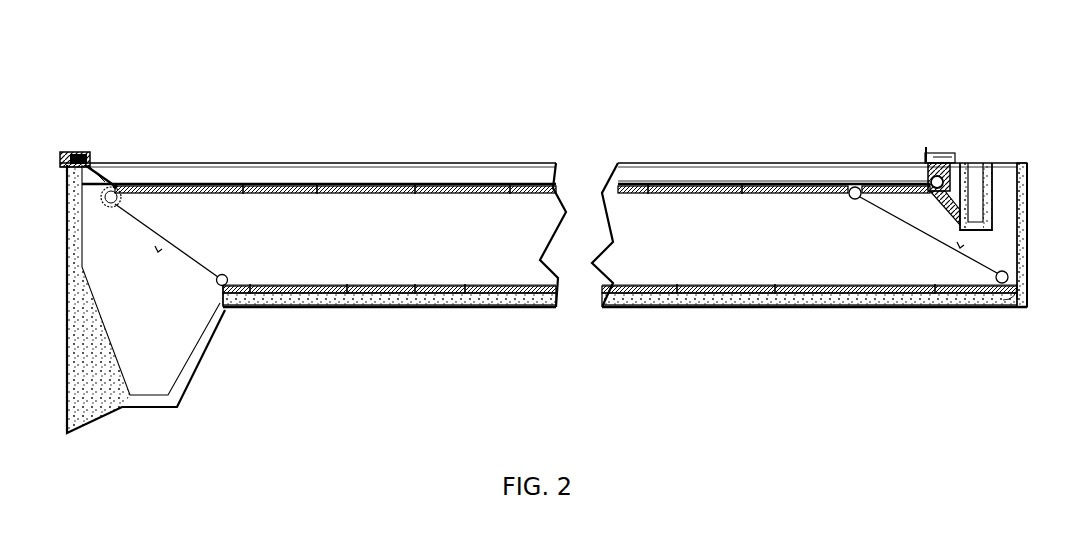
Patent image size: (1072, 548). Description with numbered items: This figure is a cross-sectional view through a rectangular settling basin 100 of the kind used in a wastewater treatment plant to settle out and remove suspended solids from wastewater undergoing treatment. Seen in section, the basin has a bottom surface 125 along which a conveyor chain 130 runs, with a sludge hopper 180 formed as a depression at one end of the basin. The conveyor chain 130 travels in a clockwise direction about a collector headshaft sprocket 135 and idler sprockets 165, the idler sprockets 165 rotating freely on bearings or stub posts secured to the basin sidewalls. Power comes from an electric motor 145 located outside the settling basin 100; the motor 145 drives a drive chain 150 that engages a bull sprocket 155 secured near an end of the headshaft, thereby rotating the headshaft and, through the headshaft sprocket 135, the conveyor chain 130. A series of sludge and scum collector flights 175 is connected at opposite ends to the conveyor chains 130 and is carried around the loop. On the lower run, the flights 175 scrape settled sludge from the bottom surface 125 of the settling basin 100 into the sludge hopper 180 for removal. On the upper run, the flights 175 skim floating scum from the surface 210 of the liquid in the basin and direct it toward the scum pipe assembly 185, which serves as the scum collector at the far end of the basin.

The settling basin 100 is at (457, 111).
The bottom surface 125 is at (415, 295).
The conveyor chain 130 is at (489, 193).
The collector headshaft sprocket 135 is at (109, 207).
The electric motor 145 is at (69, 152).
The drive chain 150 is at (105, 172).
The bull sprocket 155 is at (123, 200).
The idler sprocket 165 is at (226, 275).
The sludge and scum collector flight 175 is at (223, 190).
The sludge hopper 180 is at (132, 366).
The scum pipe assembly 185 is at (930, 185).
The surface of liquid 210 is at (302, 185).